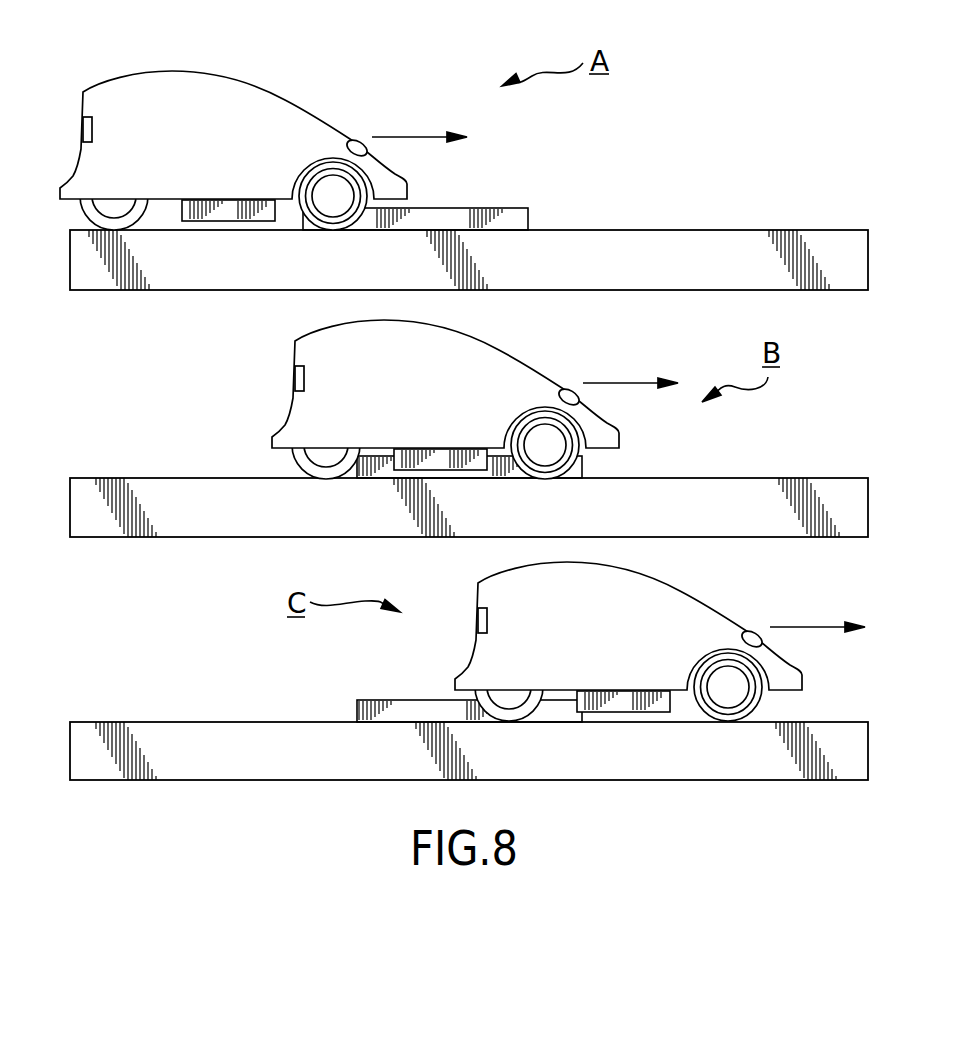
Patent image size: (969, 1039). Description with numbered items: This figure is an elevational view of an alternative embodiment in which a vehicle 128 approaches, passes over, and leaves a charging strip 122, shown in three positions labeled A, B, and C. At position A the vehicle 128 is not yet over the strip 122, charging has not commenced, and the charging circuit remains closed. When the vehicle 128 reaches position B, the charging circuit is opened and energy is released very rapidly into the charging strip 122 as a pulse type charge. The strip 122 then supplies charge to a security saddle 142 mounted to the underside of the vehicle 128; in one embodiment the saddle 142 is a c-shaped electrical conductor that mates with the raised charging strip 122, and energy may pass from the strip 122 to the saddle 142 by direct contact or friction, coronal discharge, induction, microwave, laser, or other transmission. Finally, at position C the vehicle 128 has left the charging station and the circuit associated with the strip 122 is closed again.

The vehicle 128 is at (255, 83).
The charging strip 122 is at (513, 210).
The saddle 142 is at (225, 213).